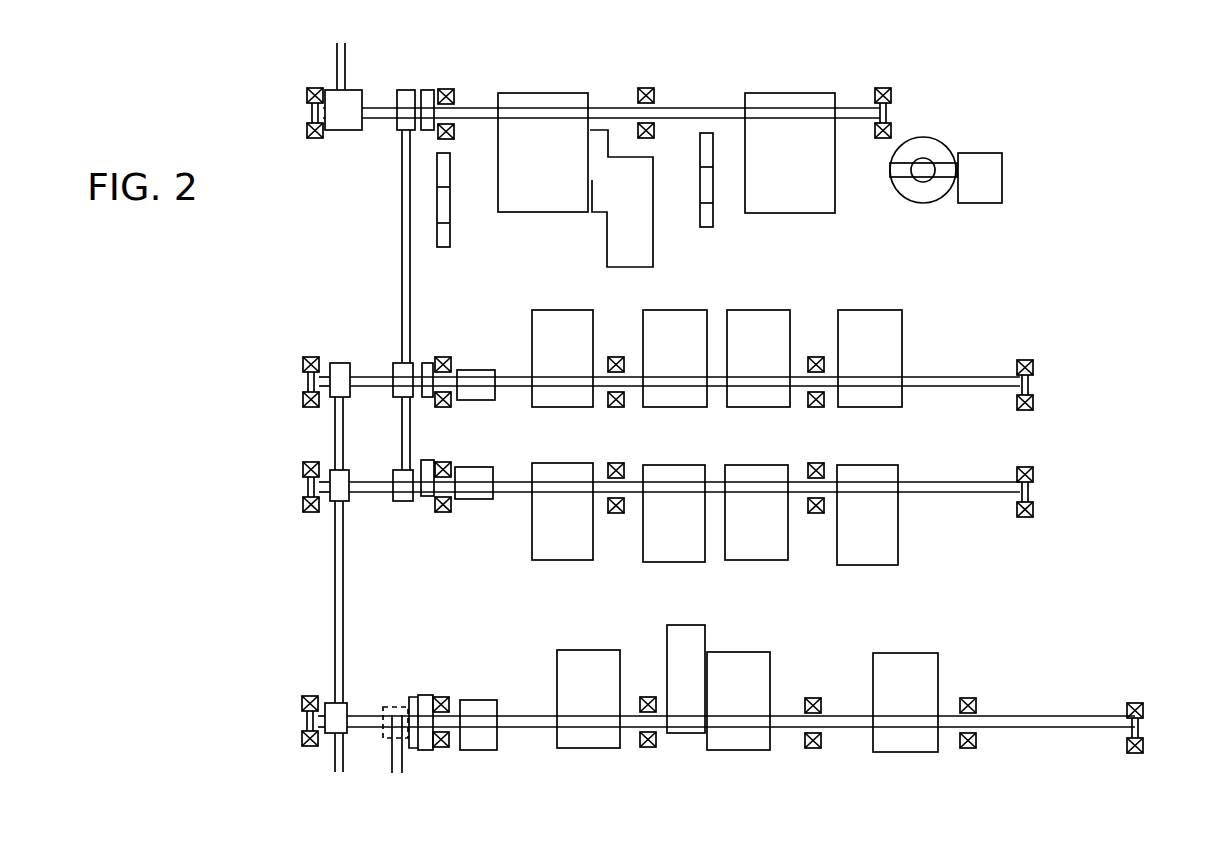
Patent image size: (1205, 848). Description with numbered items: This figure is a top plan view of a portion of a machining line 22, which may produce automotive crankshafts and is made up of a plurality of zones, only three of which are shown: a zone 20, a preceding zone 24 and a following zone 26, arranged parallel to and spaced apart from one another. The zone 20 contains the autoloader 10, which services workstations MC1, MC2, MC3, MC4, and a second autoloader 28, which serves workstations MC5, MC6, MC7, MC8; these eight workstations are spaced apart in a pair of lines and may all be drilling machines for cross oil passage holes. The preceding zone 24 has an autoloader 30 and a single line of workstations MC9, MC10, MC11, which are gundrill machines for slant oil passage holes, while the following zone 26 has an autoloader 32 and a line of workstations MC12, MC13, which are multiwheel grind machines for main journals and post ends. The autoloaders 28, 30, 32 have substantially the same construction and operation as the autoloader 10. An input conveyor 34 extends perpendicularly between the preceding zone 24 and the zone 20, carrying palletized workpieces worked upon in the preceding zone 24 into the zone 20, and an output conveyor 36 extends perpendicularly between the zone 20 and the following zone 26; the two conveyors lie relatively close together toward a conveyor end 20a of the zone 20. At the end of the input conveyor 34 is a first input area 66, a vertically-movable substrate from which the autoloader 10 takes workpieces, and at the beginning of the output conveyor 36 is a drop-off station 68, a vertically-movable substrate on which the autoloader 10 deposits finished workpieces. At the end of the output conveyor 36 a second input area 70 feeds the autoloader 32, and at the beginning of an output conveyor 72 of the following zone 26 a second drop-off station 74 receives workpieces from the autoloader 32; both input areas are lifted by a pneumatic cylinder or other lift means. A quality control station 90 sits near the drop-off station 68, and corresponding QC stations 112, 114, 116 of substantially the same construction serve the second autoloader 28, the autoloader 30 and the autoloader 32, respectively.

The autoloader 10 is at (948, 368).
The zone 20 is at (1050, 433).
The conveyor end 20a is at (331, 340).
The machining line 22 is at (1067, 225).
The preceding zone 24 is at (995, 683).
The following zone 26 is at (920, 117).
The second autoloader 28 is at (947, 482).
The autoloader 30 is at (997, 742).
The autoloader 32 is at (686, 96).
The input conveyor 34 is at (335, 433).
The output conveyor 36 is at (402, 229).
The first input area 66 is at (330, 379).
The drop-off station 68 is at (410, 362).
The second input area 70 is at (406, 93).
The output conveyor 72 is at (340, 63).
The second drop-off station 74 is at (345, 118).
The quality control station 90 is at (430, 398).
The QC station 112 is at (427, 506).
The QC station 114 is at (422, 695).
The QC station 116 is at (434, 93).
The workstation MC1 is at (545, 398).
The workstation MC2 is at (657, 398).
The workstation MC3 is at (745, 398).
The workstation MC4 is at (853, 398).
The workstation MC5 is at (545, 537).
The workstation MC6 is at (655, 545).
The workstation MC7 is at (750, 550).
The workstation MC8 is at (893, 538).
The workstation MC9 is at (590, 740).
The workstation MC10 is at (718, 742).
The workstation MC11 is at (903, 745).
The workstation MC12 is at (528, 187).
The workstation MC13 is at (810, 192).